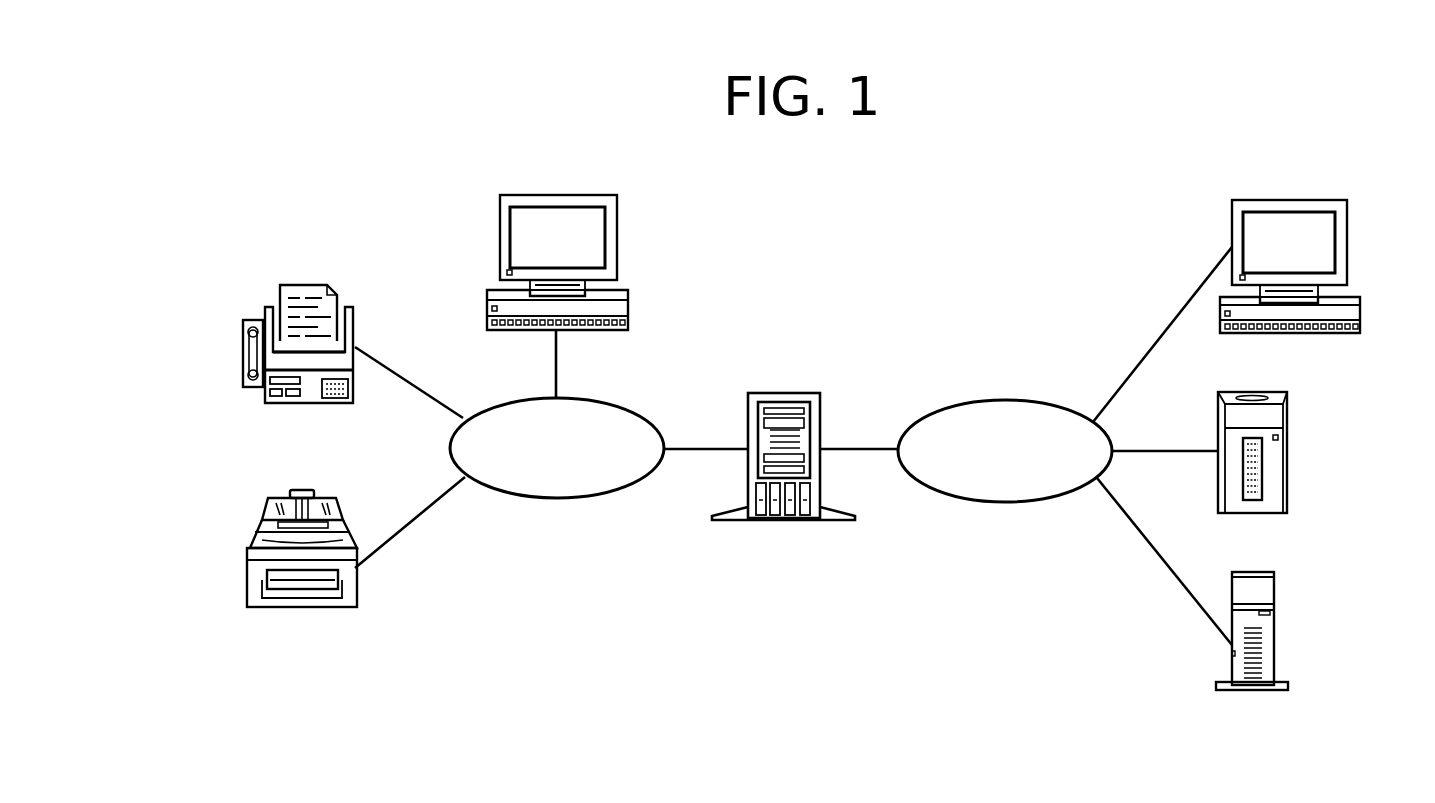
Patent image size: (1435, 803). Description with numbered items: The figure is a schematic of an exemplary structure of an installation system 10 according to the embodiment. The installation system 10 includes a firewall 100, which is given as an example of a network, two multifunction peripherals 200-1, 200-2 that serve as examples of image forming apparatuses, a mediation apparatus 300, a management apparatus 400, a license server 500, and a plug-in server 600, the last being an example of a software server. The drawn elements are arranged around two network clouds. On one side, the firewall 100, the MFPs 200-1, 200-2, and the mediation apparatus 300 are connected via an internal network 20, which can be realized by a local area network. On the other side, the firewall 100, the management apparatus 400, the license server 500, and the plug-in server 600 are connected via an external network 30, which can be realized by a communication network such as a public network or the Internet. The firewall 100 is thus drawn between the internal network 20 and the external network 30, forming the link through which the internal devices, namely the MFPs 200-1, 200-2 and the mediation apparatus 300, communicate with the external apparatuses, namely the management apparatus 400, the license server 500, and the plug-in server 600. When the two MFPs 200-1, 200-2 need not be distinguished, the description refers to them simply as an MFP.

The installation system 10 is at (1026, 184).
The internal network 20 is at (603, 398).
The external network 30 is at (1043, 400).
The firewall 100 is at (785, 392).
The multifunction peripheral 200-1 is at (243, 350).
The multifunction peripheral 200-2 is at (247, 570).
The mediation apparatus 300 is at (617, 237).
The management apparatus 400 is at (1347, 243).
The license server 500 is at (1288, 452).
The plug-in server 600 is at (1275, 638).